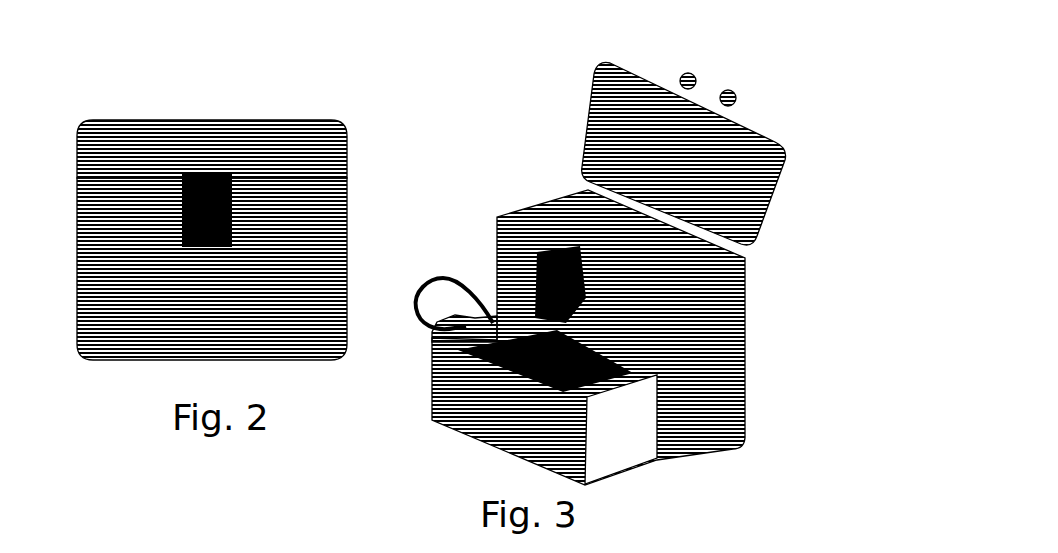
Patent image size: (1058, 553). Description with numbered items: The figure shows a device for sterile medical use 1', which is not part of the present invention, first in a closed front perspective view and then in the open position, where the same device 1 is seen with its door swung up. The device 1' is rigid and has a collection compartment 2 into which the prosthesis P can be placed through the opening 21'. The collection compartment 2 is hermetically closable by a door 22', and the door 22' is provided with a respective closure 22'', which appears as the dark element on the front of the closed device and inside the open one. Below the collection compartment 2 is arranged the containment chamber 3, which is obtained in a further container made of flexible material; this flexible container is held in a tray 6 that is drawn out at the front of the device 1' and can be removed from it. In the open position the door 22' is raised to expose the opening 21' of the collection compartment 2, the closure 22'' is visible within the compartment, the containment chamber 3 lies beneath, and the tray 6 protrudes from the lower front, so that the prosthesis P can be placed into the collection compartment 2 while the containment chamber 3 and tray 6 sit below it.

In FIG. 3, the device 1 is at (606, 278).
In FIG. 2, the device for sterile medical use 1' is at (201, 184).
In FIG. 3, the collection compartment 2 is at (687, 265).
In FIG. 3, the containment chamber 3 is at (544, 368).
In FIG. 3, the tray 6 is at (620, 440).
In FIG. 3, the opening 21' is at (577, 162).
In FIG. 2, the door 22' is at (232, 125).
In FIG. 3, the door 22' is at (684, 138).
In FIG. 2, the closure 22'' is at (123, 240).
In FIG. 3, the closure 22'' is at (510, 266).
In FIG. 3, the prosthesis P is at (570, 250).